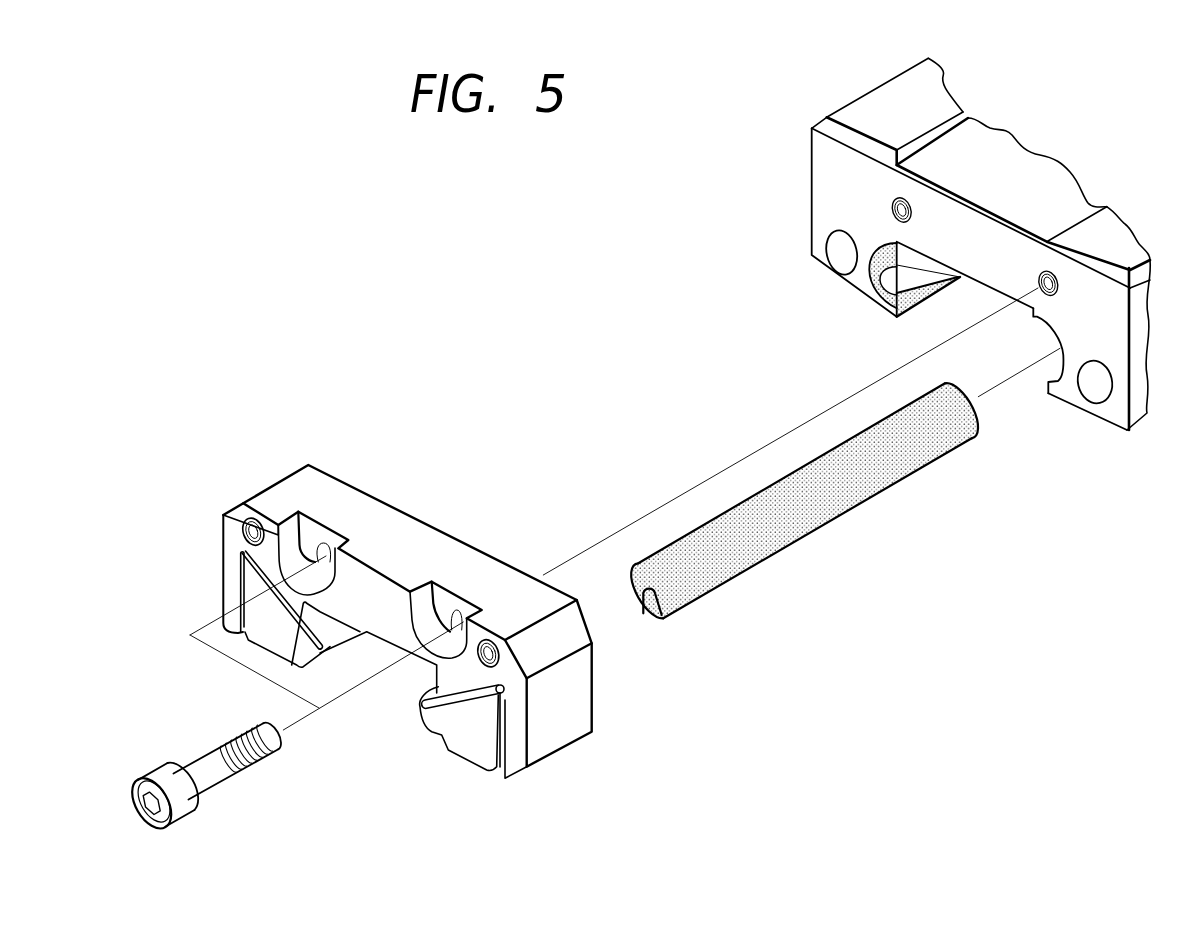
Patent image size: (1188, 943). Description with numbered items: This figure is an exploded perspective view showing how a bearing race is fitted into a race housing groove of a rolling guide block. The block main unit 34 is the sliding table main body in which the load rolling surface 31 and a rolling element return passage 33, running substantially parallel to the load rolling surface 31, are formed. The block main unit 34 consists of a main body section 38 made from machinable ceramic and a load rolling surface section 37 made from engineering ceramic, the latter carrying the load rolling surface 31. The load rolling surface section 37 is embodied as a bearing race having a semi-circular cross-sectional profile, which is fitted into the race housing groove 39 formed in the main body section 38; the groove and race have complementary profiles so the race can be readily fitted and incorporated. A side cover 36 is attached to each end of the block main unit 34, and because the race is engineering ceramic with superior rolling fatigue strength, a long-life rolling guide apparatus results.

The block main unit 34 is at (898, 115).
The main body section 38 is at (830, 193).
The rolling element return passage 33 is at (837, 253).
The load rolling surface 31 is at (890, 283).
The race housing groove 39 is at (1058, 363).
The side cover 36 is at (282, 498).
The load rolling surface section 37 is at (783, 530).